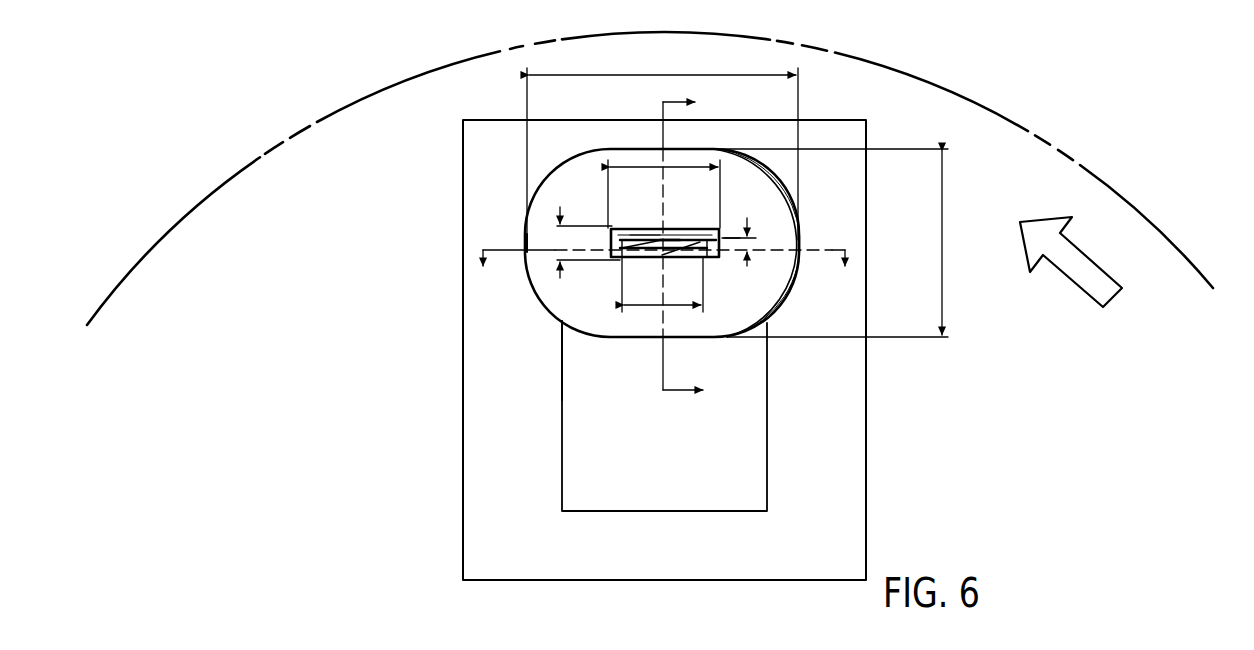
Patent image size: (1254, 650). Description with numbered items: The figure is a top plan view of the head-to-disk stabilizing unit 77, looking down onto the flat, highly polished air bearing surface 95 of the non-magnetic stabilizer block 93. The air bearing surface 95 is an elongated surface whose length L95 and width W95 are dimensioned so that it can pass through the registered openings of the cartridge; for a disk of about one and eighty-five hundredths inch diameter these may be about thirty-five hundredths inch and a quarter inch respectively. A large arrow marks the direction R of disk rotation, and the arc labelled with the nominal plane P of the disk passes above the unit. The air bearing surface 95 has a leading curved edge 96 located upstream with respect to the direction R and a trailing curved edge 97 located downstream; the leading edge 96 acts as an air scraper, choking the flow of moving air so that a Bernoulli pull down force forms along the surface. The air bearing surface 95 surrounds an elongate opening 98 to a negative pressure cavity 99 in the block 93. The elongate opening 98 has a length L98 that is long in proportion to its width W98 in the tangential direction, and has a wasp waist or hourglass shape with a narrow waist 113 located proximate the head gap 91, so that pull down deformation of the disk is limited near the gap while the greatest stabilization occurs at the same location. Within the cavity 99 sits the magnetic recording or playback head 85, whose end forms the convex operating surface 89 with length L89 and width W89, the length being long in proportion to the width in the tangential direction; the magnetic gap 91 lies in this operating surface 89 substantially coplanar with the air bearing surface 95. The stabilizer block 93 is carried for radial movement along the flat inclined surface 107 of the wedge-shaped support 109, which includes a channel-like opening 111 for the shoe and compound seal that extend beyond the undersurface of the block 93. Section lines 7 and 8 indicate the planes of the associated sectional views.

The section line 7- 7 is at (665, 270).
The section line 8- 8 is at (692, 246).
The head-to-disk stabilizing unit 77 is at (551, 323).
The magnetic recording or playback head 85 is at (608, 244).
The operating surface 89 is at (706, 230).
The magnetic gap 91 is at (680, 230).
The stabilizer block 93 is at (587, 334).
The air bearing surface 95 is at (632, 336).
The leading curved edge 96 is at (800, 232).
The trailing curved edge 97 is at (525, 247).
The elongate opening 98 is at (802, 246).
The negative pressure cavity 99 is at (732, 243).
The flat inclined surface 107 is at (843, 395).
The wedge-shaped support 109 is at (869, 442).
The channel-like opening 111 is at (747, 487).
The narrow waist 113 is at (648, 230).
The length of the air bearing surface L95 is at (640, 75).
The length of the elongate opening L98 is at (648, 166).
The length of the operating surface L89 is at (683, 307).
The width of the air bearing surface W95 is at (942, 257).
The width of the elongate opening W98 is at (527, 272).
The width of the operating surface W89 is at (748, 268).
The nominal plane of the disk P is at (318, 120).
The direction of disk rotation R is at (1028, 218).